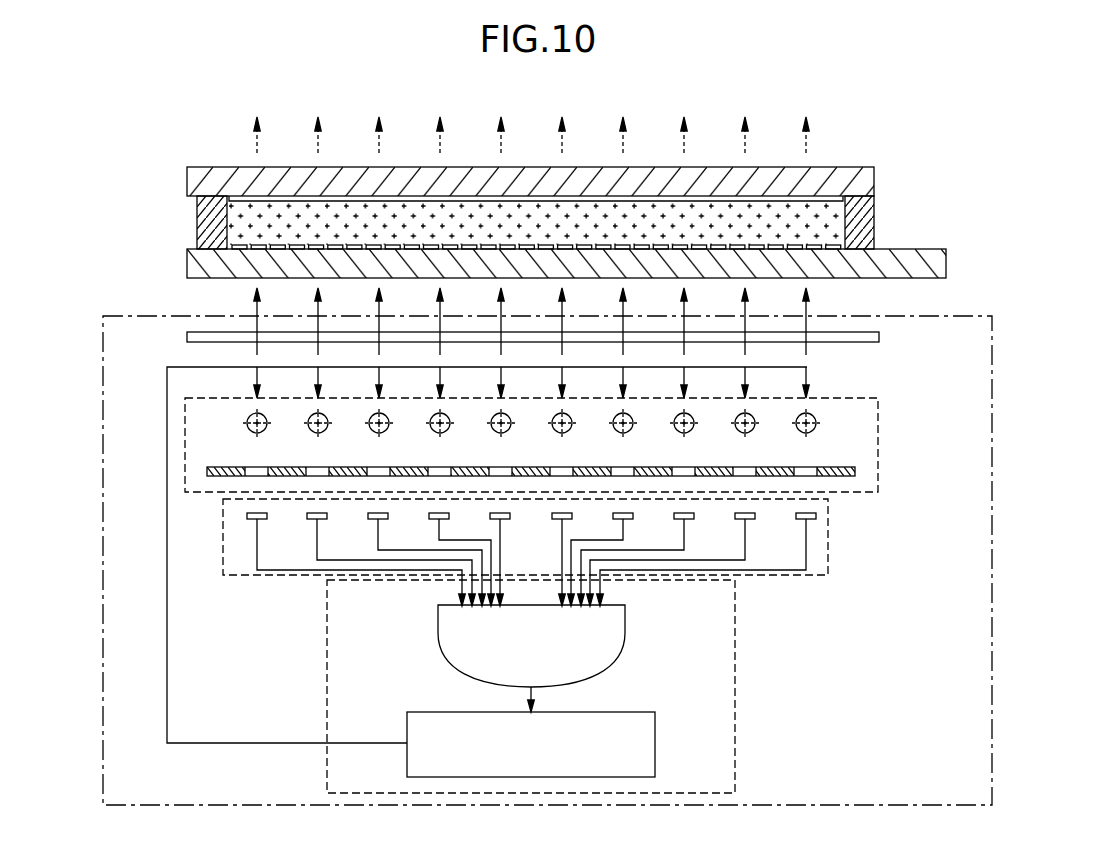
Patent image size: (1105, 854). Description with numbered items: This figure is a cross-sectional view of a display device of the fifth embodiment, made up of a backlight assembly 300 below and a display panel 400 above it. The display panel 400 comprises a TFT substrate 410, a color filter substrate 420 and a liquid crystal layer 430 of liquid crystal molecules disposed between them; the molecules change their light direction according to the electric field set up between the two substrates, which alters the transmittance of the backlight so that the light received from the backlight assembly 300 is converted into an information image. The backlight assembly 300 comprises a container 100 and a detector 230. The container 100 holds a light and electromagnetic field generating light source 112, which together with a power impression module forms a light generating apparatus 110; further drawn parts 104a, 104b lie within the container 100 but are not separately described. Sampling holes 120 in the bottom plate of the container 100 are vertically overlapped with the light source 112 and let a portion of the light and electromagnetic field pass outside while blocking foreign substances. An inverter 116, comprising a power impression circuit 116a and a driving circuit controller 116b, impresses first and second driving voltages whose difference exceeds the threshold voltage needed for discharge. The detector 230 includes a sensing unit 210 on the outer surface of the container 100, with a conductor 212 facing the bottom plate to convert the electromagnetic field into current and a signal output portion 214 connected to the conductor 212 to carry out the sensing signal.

The container 100 is at (578, 453).
The first electrode layer 104a is at (838, 466).
The second electrode layer 104b is at (589, 493).
The light generating apparatus 110 is at (592, 395).
The light source 112 is at (817, 425).
The inverter 116 is at (573, 686).
The power impression circuit 116a is at (630, 712).
The driving circuit controller 116b is at (625, 633).
The sampling holes 120 is at (259, 472).
The sensing unit 210 is at (579, 575).
The conductor 212 is at (810, 521).
The signal output portion 214 is at (770, 571).
The detector 230 is at (243, 576).
The backlight assembly 300 is at (992, 605).
The display panel 400 is at (606, 187).
The TFT substrate 410 is at (940, 264).
The color filter substrate 420 is at (850, 166).
The liquid crystal layer 430 is at (835, 218).